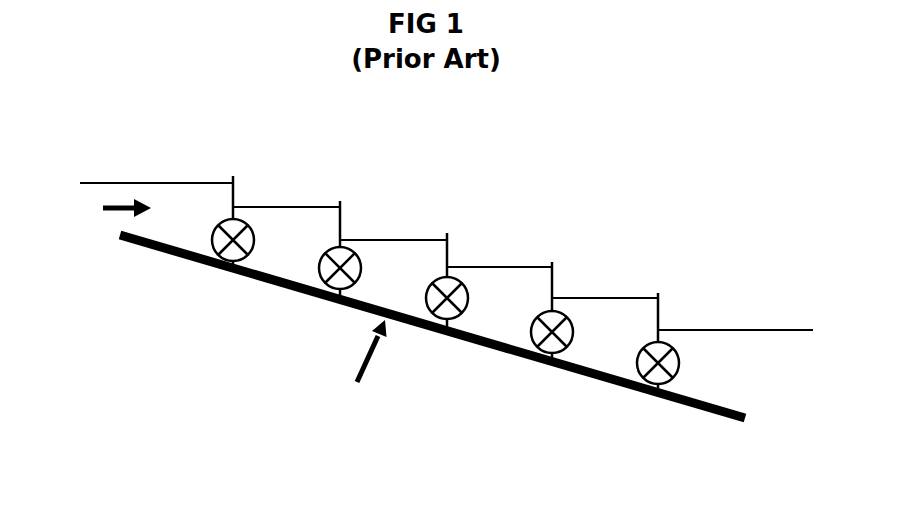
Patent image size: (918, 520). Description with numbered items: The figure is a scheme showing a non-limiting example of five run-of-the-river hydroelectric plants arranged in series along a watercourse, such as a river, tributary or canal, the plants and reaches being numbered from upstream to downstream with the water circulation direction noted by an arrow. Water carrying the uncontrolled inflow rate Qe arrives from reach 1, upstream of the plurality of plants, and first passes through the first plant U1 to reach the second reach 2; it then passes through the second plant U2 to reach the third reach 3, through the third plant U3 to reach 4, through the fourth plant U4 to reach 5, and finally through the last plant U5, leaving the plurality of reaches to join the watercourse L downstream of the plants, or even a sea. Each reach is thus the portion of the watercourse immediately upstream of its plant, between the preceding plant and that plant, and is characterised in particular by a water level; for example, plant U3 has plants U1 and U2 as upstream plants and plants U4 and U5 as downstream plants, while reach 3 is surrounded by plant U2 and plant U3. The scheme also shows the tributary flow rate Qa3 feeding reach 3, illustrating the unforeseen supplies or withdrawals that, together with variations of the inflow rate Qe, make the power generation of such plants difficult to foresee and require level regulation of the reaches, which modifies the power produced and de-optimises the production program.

The reach 1 is at (196, 181).
The reach 2 is at (293, 206).
The reach 3 is at (391, 239).
The reach 4 is at (503, 266).
The reach 5 is at (600, 297).
The watercourse L is at (725, 329).
The hydroelectric plant U1 is at (228, 273).
The hydroelectric plant U2 is at (333, 308).
The hydroelectric plant U3 is at (438, 335).
The hydroelectric plant U4 is at (553, 365).
The hydroelectric plant U5 is at (655, 395).
The uncontrolled inflow rate Qe is at (106, 207).
The tributary flow rate Qa3 is at (354, 368).